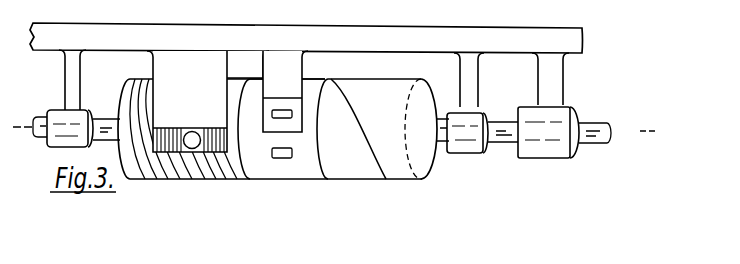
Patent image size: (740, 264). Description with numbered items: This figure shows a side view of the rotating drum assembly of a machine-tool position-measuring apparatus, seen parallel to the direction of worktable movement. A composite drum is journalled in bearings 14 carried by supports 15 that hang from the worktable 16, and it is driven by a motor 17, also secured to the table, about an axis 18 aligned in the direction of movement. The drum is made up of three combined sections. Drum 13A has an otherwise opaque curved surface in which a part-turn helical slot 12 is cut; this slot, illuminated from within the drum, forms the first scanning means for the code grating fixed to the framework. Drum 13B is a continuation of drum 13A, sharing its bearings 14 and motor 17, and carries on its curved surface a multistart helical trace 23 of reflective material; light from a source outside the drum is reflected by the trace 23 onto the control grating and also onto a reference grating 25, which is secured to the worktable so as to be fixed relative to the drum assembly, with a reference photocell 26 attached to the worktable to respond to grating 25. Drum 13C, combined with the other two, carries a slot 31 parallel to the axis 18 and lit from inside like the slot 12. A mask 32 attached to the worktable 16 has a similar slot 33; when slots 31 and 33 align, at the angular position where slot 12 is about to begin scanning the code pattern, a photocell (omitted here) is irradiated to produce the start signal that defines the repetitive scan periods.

The part-turn helical slot 12 is at (358, 124).
The drum 13A is at (394, 206).
The drum 13B is at (218, 208).
The drum 13C is at (297, 206).
The bearings 14 is at (89, 111).
The supports 15 is at (68, 75).
The worktable 16 is at (392, 50).
The motor 17 is at (582, 163).
The axis 18 is at (608, 133).
The multistart helical trace 23 is at (131, 179).
The reference grating 25 is at (172, 128).
The reference photocell 26 is at (194, 134).
The slot 31 is at (282, 148).
The mask 32 is at (276, 98).
The slot 33 is at (288, 110).